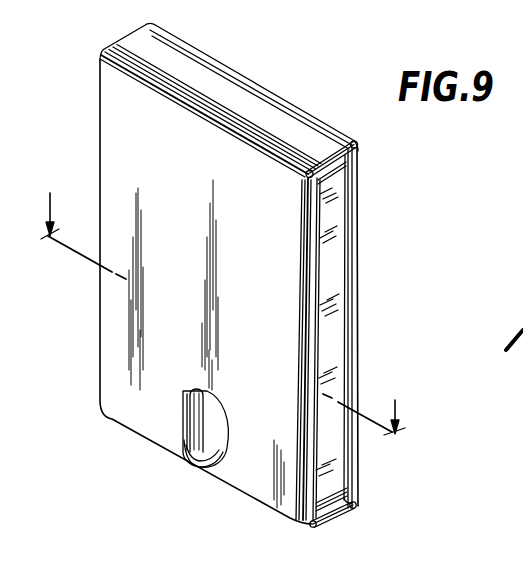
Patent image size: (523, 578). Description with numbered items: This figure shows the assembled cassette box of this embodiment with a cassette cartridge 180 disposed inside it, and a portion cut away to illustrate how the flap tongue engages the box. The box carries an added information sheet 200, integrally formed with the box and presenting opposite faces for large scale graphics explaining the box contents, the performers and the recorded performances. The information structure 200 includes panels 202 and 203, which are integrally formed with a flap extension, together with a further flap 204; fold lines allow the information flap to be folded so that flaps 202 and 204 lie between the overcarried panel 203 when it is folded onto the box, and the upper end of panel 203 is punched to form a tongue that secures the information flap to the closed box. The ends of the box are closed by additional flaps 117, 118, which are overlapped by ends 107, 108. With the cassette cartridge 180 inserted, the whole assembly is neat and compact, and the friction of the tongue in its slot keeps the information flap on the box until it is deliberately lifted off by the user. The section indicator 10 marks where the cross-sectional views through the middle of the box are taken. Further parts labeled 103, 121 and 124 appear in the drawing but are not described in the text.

The information sheet 200 is at (89, 304).
The end 108 is at (284, 118).
The additional flap 118 is at (336, 166).
The side wall 124 is at (352, 352).
The edge rib 121 is at (321, 373).
The cassette cartridge 180 is at (328, 258).
The additional flap 117 is at (331, 524).
The end 107 is at (331, 518).
The panel 203 is at (134, 401).
The panel 202 is at (182, 453).
The flap 204 is at (181, 428).
The tab 103 is at (205, 394).
The section line 10 is at (217, 335).